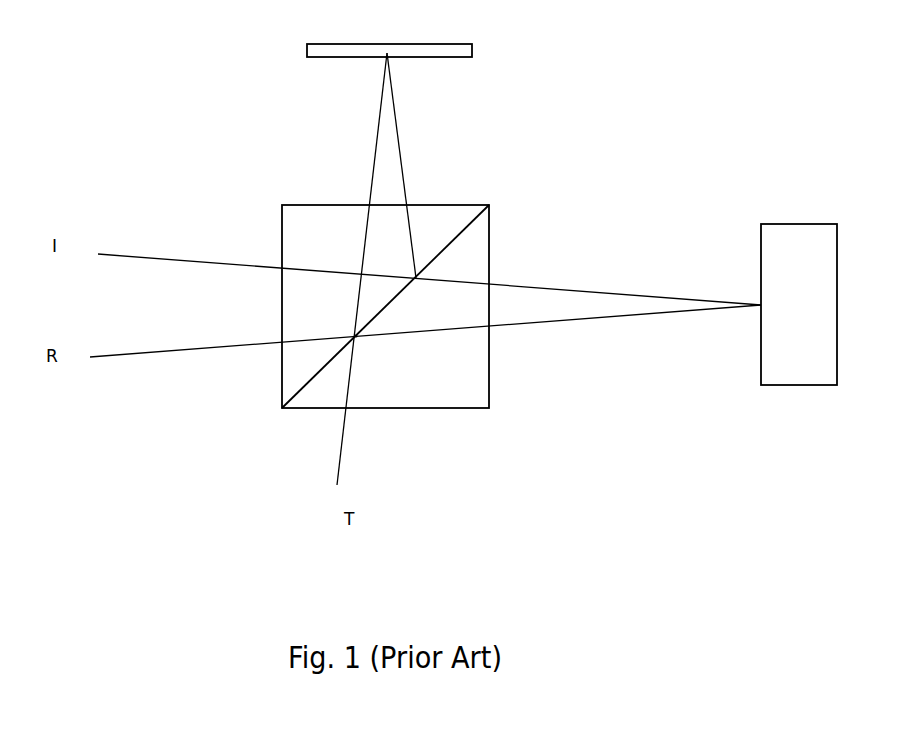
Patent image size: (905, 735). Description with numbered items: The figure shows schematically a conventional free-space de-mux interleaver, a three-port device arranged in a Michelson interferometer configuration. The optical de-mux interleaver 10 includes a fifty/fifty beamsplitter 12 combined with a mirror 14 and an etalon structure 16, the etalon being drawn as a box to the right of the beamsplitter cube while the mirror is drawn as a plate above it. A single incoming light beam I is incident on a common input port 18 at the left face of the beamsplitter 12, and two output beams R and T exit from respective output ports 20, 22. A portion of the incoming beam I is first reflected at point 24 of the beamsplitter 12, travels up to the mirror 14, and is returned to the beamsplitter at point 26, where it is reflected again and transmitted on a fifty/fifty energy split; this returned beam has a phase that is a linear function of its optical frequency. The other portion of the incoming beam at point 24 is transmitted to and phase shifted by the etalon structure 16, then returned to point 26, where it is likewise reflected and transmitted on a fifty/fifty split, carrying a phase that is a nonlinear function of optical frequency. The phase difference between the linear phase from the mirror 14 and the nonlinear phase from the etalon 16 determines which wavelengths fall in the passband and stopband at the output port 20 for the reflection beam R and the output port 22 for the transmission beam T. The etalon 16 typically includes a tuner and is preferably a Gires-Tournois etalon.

The optical de-mux interleaver 10 is at (166, 106).
The beamsplitter 12 is at (457, 242).
The mirror 14 is at (365, 57).
The etalon structure 16 is at (800, 259).
The common input port 18 is at (271, 263).
The output port 20 is at (278, 347).
The output port 22 is at (348, 410).
The point of the beamsplitter 24 is at (418, 280).
The point of the beamsplitter 26 is at (358, 338).